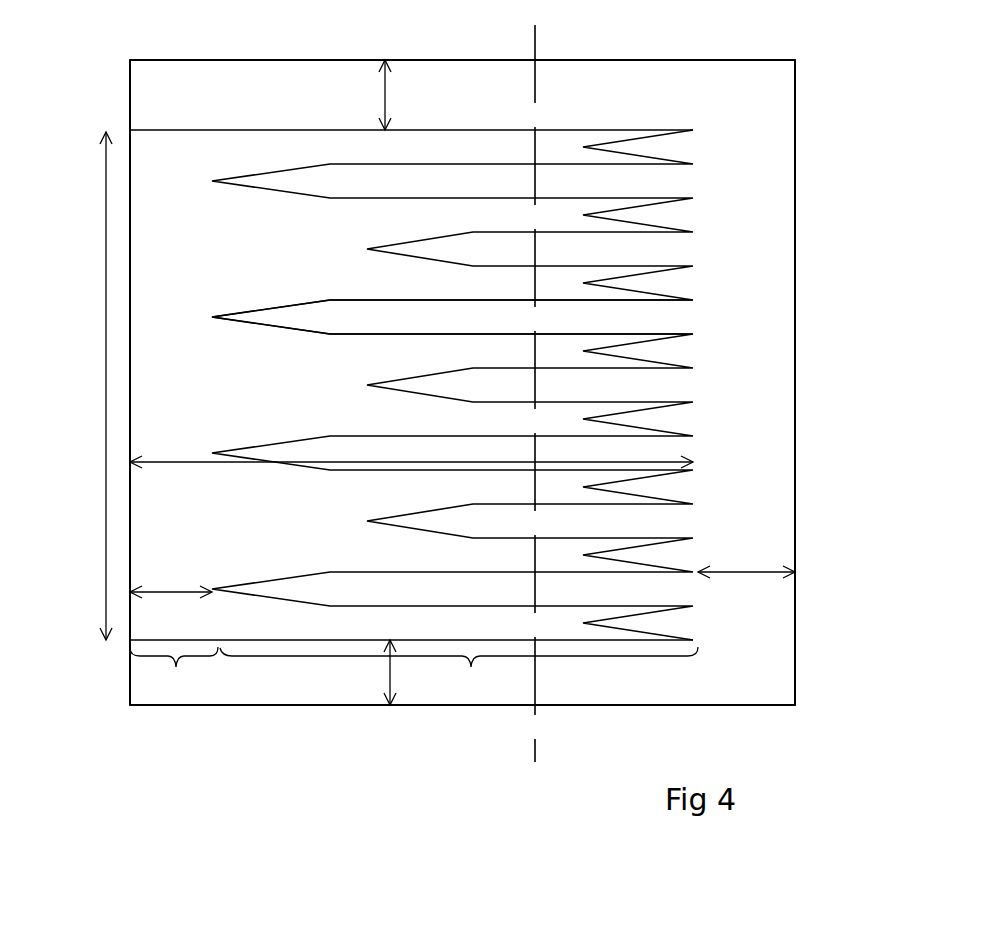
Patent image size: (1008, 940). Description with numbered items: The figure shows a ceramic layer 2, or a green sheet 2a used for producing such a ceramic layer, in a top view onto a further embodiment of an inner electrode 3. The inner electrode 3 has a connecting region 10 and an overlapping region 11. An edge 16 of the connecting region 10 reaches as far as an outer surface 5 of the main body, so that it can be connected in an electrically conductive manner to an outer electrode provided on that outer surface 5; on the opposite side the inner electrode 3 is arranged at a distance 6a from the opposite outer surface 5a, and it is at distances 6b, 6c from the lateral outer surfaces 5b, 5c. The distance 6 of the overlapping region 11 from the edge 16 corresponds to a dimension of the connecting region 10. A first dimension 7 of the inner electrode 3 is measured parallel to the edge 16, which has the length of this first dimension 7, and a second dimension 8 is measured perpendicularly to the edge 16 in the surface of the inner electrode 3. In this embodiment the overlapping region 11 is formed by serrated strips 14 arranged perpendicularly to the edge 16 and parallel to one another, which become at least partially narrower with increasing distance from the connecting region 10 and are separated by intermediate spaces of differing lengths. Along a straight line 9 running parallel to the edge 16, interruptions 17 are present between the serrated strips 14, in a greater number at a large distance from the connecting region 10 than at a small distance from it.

The ceramic layer 2 is at (665, 78).
The green sheet 2a is at (462, 382).
The inner electrode 3 is at (240, 152).
The outer surface 5 is at (126, 110).
The opposite outer surface 5a is at (798, 97).
The lateral outer surface 5b is at (270, 712).
The lateral outer surface 5c is at (436, 47).
The distance 6 is at (186, 590).
The distance 6a is at (752, 570).
The distance 6b is at (385, 683).
The distance 6c is at (382, 96).
The first dimension 7 is at (100, 360).
The second dimension 8 is at (188, 462).
The straight line 9 is at (533, 737).
The connecting region 10 is at (174, 677).
The overlapping region 11 is at (478, 652).
The serrated strips 14 is at (668, 133).
The edge 16 is at (130, 233).
The interruptions 17 is at (533, 316).